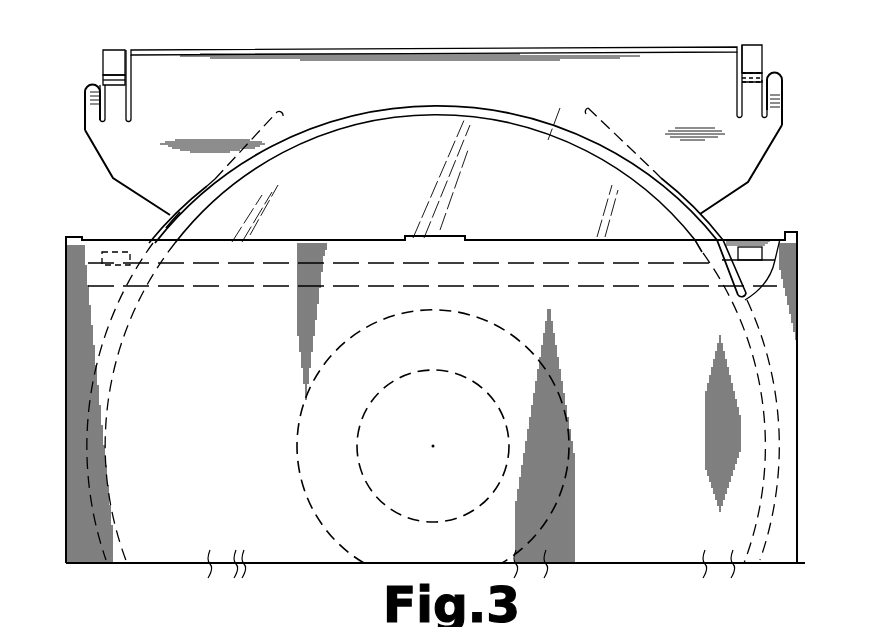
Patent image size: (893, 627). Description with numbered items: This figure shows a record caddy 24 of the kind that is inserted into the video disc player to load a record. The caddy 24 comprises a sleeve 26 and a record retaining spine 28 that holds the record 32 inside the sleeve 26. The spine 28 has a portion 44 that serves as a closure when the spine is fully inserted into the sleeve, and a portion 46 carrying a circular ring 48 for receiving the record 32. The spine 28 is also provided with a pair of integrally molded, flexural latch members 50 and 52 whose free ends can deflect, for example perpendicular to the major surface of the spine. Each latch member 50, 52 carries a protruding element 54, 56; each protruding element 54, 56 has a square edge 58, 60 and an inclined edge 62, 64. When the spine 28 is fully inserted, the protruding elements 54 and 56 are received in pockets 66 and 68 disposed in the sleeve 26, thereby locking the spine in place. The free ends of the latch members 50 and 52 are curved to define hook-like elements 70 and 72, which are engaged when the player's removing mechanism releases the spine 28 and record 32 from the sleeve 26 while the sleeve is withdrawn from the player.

The record caddy 24 is at (438, 62).
The sleeve 26 is at (788, 447).
The record retaining spine 28 is at (133, 66).
The record 32 is at (658, 230).
The closure portion 44 is at (626, 38).
The ring-carrying portion 46 is at (767, 135).
The circular ring 48 is at (168, 217).
The flexural latch member 50 is at (118, 72).
The flexural latch member 52 is at (757, 45).
The protruding element 54 is at (103, 82).
The protruding element 56 is at (767, 76).
The square edge 58 is at (132, 50).
The square edge 60 is at (757, 68).
The inclined edge 62 is at (118, 83).
The inclined edge 64 is at (737, 70).
The pocket 66 is at (106, 252).
The pocket 68 is at (748, 257).
The hook-like element 70 is at (110, 62).
The hook-like element 72 is at (748, 43).